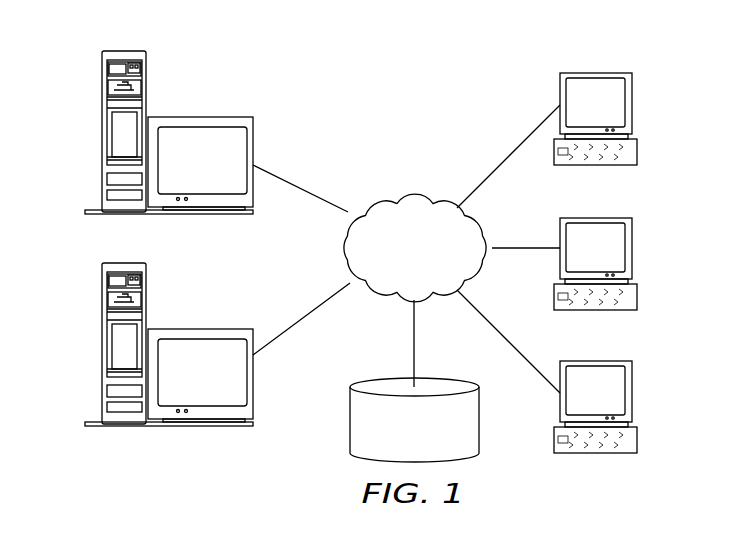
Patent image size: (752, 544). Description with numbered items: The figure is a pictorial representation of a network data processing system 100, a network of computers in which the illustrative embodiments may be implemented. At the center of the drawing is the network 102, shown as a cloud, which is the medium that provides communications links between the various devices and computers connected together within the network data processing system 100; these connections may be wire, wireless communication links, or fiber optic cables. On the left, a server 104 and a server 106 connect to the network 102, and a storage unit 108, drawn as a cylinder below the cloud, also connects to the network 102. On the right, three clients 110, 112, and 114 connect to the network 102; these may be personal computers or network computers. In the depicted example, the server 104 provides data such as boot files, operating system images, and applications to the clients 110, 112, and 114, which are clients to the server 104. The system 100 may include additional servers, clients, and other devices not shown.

The network data processing system 100 is at (463, 97).
The network 102 is at (386, 199).
The server 104 is at (102, 135).
The server 106 is at (102, 346).
The storage unit 108 is at (350, 431).
The client 110 is at (632, 105).
The client 112 is at (632, 250).
The client 114 is at (632, 390).